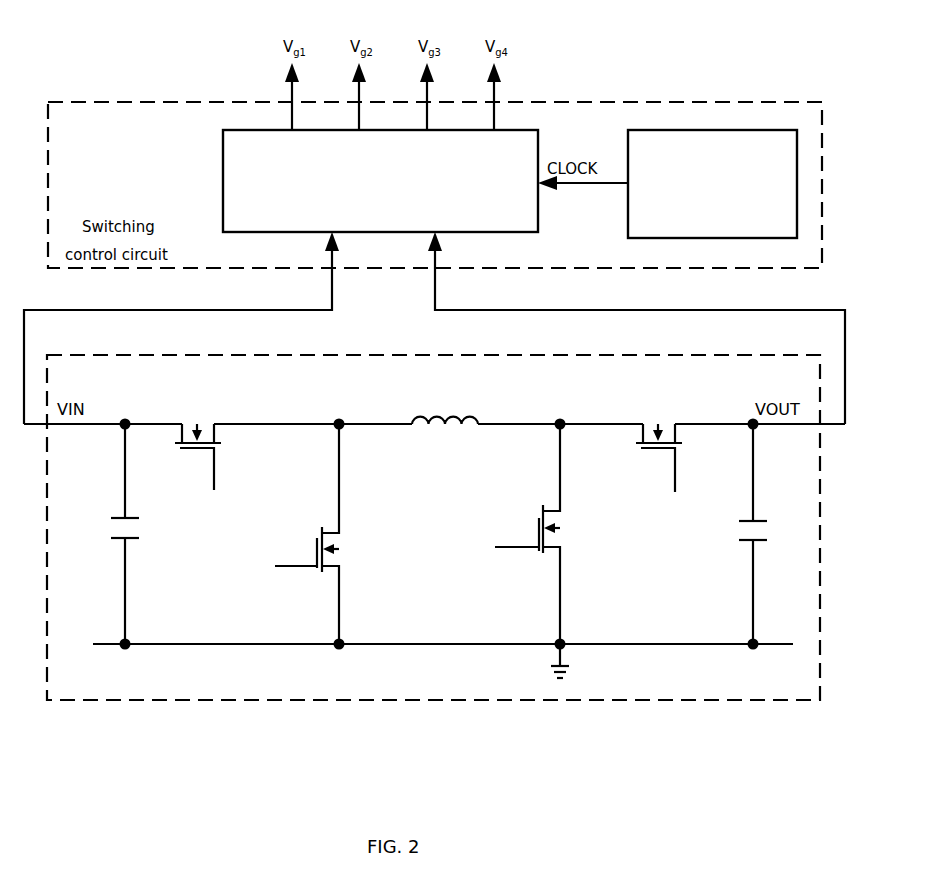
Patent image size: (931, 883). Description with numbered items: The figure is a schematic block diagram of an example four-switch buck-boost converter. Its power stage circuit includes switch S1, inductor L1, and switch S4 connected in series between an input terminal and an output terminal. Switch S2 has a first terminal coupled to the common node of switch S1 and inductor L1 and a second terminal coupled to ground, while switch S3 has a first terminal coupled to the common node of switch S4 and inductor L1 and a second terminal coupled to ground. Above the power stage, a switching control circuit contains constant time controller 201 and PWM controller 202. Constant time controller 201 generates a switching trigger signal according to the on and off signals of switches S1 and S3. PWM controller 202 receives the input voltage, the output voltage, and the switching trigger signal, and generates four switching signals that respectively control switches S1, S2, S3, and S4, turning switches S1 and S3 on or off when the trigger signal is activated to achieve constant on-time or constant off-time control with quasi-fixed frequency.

The constant time controller 201 is at (712, 184).
The PWM controller 202 is at (380, 181).
The switch S1 is at (198, 448).
The switch S2 is at (301, 534).
The switch S3 is at (536, 534).
The switch S4 is at (659, 450).
The inductor L1 is at (445, 408).